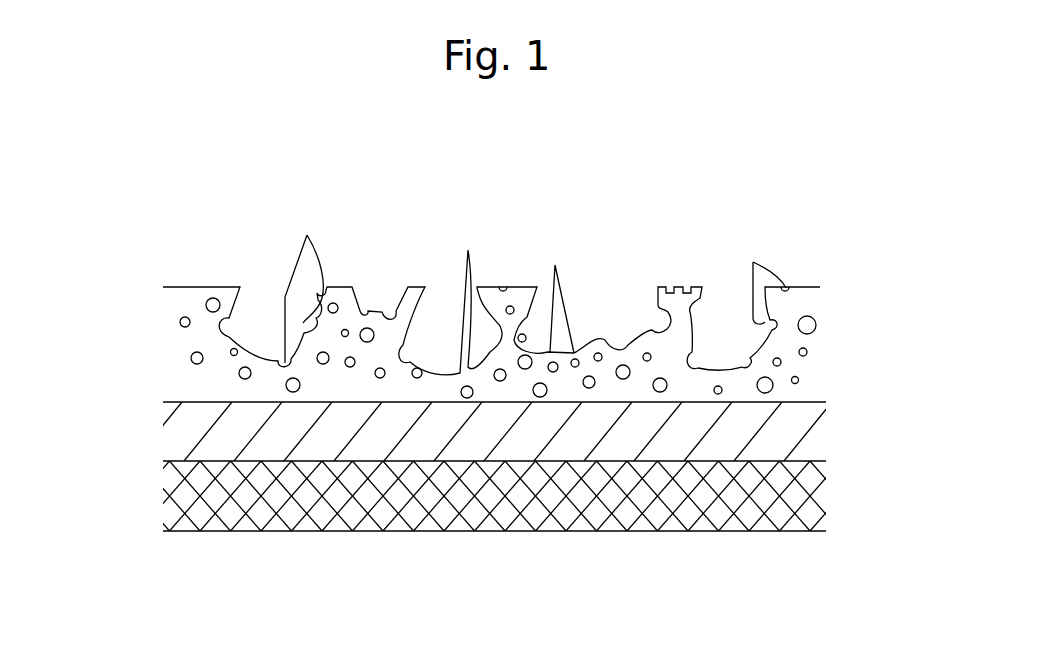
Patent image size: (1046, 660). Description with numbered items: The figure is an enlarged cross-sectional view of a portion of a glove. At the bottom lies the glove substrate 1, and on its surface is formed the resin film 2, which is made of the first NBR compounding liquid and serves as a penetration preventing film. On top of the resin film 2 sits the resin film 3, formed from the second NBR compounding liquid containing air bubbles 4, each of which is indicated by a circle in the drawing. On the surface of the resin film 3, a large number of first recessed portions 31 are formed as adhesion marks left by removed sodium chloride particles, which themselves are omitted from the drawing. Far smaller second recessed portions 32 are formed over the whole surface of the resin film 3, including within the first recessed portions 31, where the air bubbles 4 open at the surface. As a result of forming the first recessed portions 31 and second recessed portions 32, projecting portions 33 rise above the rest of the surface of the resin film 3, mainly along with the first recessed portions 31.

The glove substrate 1 is at (803, 502).
The resin film 2 is at (788, 435).
The resin film 3 is at (800, 368).
The air bubbles 4 is at (192, 358).
The first recessed portions 31 is at (277, 300).
The second recessed portions 32 is at (323, 297).
The projecting portions 33 is at (349, 274).